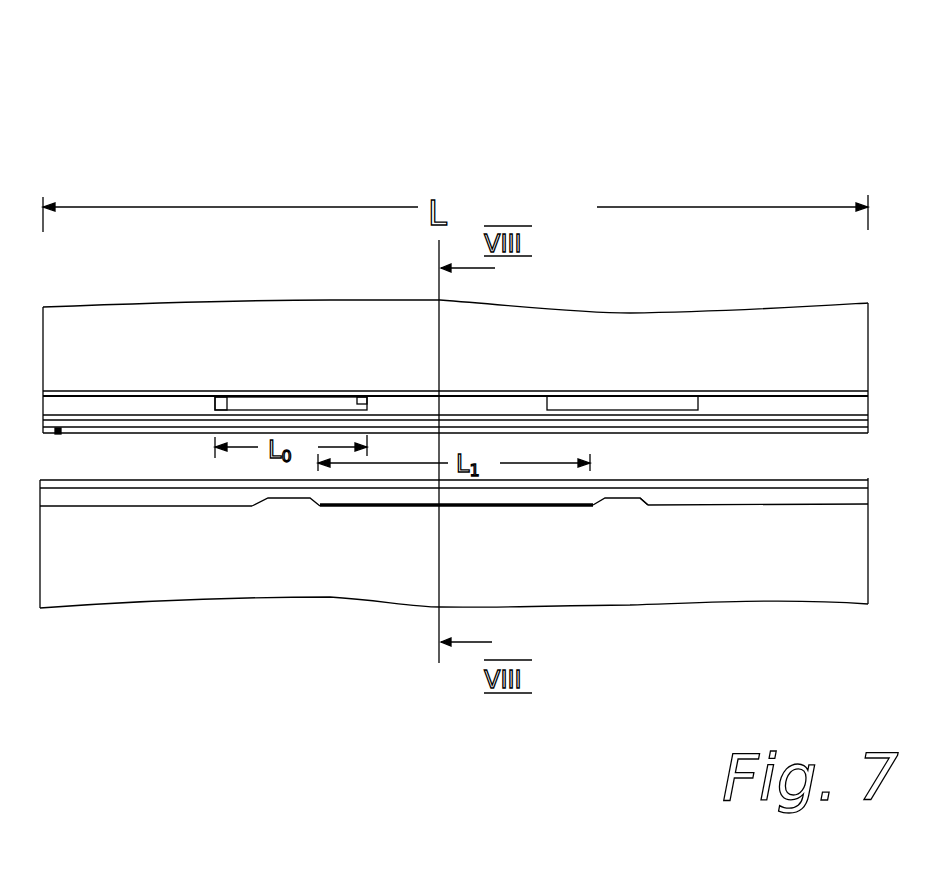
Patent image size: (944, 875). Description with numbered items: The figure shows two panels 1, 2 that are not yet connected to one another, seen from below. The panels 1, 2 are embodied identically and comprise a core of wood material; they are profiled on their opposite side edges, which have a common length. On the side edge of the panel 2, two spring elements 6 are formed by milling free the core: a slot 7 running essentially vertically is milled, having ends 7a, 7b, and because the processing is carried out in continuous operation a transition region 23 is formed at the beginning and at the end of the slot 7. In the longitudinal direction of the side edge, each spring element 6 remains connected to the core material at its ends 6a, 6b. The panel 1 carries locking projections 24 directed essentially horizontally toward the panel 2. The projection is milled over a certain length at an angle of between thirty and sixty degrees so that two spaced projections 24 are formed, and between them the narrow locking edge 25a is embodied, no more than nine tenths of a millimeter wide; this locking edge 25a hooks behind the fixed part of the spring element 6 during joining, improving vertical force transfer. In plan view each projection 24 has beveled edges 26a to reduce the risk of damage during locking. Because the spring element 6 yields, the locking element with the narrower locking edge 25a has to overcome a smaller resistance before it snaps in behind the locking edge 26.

The panel 1 is at (813, 590).
The panel 2 is at (851, 318).
The spring element 6 is at (851, 427).
The end of spring element 6a is at (115, 407).
The end of spring element 6b is at (414, 410).
The slot 7 is at (329, 396).
The end of slot 7a is at (232, 402).
The end of slot 7b is at (360, 396).
The transition region 23 is at (216, 403).
The locking projection 24 is at (292, 502).
The locking edge 25a is at (520, 508).
The locking edge 26 is at (60, 434).
The beveled edge 26a is at (650, 498).